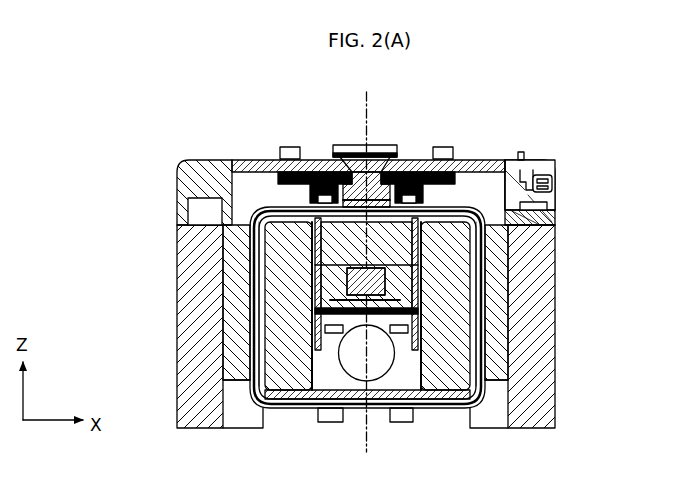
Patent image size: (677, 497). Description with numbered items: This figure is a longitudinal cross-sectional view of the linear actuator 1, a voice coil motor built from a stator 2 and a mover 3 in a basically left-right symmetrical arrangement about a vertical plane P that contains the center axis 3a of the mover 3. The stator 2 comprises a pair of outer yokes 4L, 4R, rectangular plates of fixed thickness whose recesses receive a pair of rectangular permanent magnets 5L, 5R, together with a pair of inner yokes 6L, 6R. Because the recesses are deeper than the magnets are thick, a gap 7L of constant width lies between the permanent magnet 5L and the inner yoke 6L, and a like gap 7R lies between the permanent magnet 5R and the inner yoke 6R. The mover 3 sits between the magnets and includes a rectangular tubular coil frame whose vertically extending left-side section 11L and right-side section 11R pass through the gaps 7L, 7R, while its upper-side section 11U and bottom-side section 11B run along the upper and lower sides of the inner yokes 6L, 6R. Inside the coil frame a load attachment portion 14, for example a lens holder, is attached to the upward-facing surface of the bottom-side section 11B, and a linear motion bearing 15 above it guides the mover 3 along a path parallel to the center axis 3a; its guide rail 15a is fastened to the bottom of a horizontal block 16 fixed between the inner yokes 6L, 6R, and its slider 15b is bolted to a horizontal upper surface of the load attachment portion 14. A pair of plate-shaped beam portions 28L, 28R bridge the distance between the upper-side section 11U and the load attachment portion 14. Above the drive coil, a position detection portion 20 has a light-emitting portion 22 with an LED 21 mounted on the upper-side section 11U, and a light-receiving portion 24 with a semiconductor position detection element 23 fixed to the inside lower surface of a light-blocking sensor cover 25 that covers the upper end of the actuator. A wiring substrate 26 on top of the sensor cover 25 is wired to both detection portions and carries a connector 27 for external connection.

The linear actuator 1 is at (147, 117).
The stator 2 is at (160, 236).
The mover 3 is at (456, 213).
The center axis 3a is at (320, 396).
The outer yoke 4R is at (190, 303).
The outer yoke 4L is at (548, 299).
The permanent magnet 5R is at (278, 325).
The permanent magnet 5L is at (445, 320).
The inner yoke 6R is at (292, 340).
The inner yoke 6L is at (455, 340).
The gap 7R is at (240, 247).
The gap 7L is at (492, 258).
The upper-side section 11U is at (258, 164).
The bottom-side section 11B is at (376, 400).
The right-side section 11R is at (262, 280).
The left-side section 11L is at (500, 285).
The load attachment portion 14 is at (405, 382).
The linear motion bearing 15 is at (609, 178).
The guide rail 15a is at (553, 190).
The slider 15b is at (548, 208).
The horizontal block 16 is at (540, 161).
The position detection portion 20 is at (490, 101).
The LED 21 is at (322, 172).
The light-emitting portion 22 is at (395, 200).
The semiconductor position detection element 23 is at (345, 182).
The light-receiving portion 24 is at (380, 183).
The light-blocking sensor cover 25 is at (180, 160).
The wiring substrate 26 is at (270, 159).
The connector 27 is at (361, 145).
The beam portion 28R is at (252, 380).
The beam portion 28L is at (485, 385).
The plane P is at (369, 93).